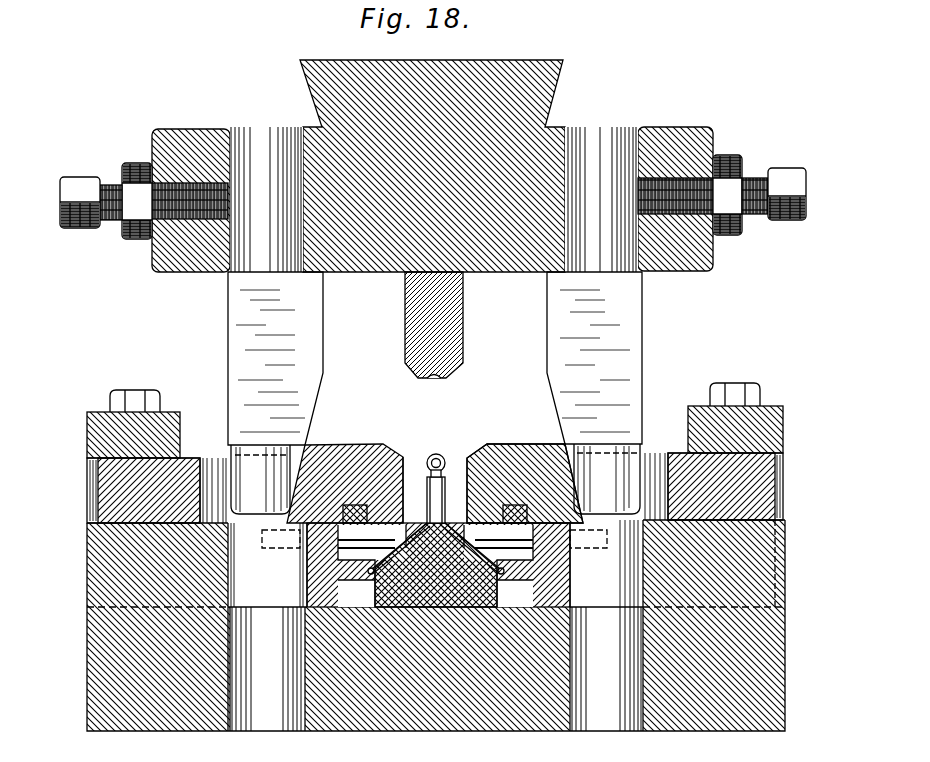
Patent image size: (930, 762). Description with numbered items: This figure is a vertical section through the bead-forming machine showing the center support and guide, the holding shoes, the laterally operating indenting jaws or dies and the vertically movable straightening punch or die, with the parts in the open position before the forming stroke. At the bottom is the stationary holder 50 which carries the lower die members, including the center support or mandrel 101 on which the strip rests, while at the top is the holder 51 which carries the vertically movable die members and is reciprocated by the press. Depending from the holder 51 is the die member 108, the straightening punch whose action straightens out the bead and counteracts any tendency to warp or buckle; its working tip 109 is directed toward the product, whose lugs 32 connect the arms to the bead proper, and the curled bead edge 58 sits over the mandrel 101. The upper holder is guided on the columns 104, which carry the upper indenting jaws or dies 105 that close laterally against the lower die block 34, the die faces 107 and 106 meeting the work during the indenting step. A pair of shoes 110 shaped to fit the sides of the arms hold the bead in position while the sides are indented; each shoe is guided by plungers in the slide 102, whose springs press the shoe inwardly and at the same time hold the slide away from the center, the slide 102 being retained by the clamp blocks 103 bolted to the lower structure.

The holder 51 is at (697, 258).
The die member 108 is at (449, 303).
The punch tip recess 109 is at (433, 379).
The guide columns 104 is at (312, 403).
The split die halves 105 is at (333, 450).
The die block 34 is at (452, 497).
The die cavity face 107 is at (379, 457).
The die cavity clearance 106 is at (410, 478).
The lugs 32 is at (423, 458).
The bead ring 58 is at (446, 468).
The mandrel cone 101 is at (436, 565).
The shoes 110 is at (393, 540).
The slide 102 is at (115, 492).
The clamp blocks 103 is at (100, 420).
The stationary holder 50 is at (459, 712).